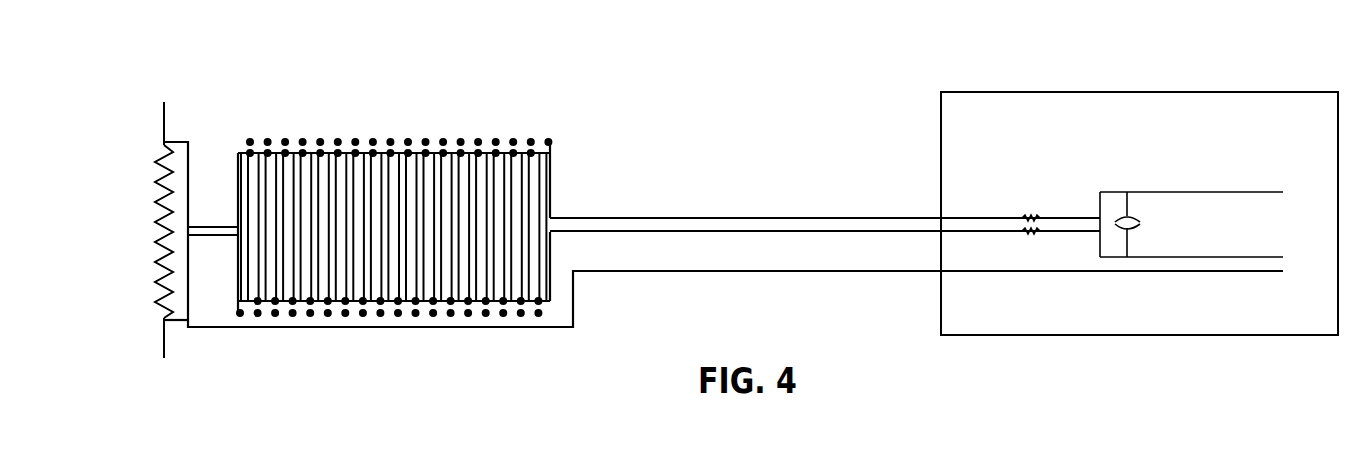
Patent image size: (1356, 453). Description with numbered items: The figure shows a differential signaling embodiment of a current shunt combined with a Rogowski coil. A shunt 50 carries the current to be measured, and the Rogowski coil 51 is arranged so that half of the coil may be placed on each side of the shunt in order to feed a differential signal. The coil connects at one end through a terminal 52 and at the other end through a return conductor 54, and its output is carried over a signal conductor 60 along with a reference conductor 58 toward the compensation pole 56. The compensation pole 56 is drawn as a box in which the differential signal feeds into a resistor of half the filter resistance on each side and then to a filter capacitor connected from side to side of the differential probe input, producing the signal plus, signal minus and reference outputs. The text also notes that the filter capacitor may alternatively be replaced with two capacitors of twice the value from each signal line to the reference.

The shunt resistor 50 is at (160, 147).
The Rogowski coil 51 is at (405, 142).
The coil terminal 52 is at (238, 163).
The coil return conductor 54 is at (550, 177).
The compensation pole 56 is at (940, 98).
The reference conductor 58 is at (715, 272).
The signal conductor 60 is at (745, 218).